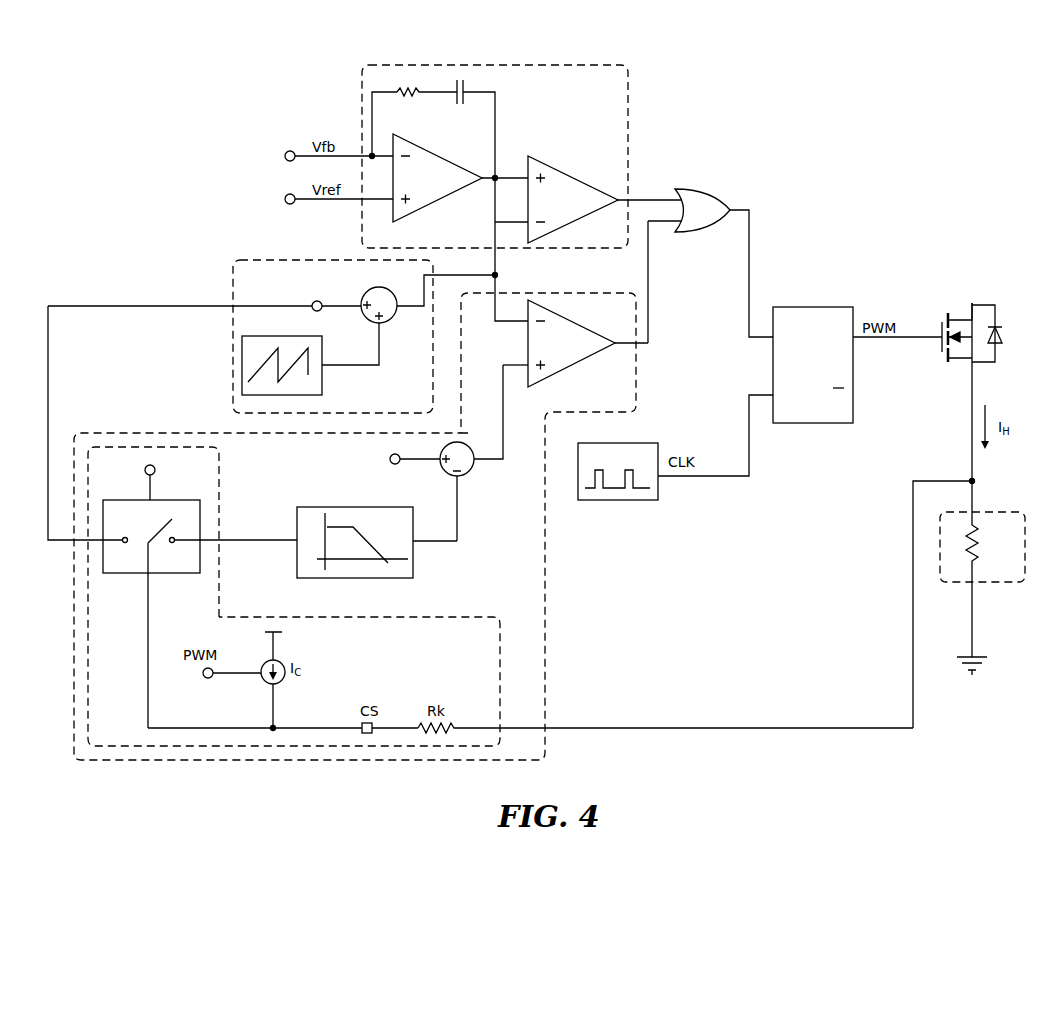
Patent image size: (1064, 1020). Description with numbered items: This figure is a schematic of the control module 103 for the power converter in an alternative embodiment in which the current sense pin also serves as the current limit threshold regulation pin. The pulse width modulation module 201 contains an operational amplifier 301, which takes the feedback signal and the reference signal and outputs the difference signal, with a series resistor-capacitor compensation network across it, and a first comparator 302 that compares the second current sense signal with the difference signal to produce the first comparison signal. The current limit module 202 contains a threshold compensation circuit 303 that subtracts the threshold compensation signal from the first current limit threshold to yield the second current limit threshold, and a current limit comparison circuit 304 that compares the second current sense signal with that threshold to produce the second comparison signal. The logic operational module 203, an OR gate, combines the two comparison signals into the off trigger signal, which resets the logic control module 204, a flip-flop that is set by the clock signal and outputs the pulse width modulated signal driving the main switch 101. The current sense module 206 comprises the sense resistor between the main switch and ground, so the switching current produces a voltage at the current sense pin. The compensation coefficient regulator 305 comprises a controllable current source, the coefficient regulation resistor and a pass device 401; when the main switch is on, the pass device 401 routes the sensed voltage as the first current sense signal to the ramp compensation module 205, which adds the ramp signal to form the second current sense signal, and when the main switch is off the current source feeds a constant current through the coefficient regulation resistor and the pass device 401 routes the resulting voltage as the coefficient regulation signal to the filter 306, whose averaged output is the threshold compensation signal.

The main switch 101 is at (937, 352).
The control module 103 is at (213, 68).
The pulse width modulation module 201 is at (577, 65).
The current limit module 202 is at (637, 373).
The logic operational module 203 is at (700, 187).
The logic control module 204 is at (812, 307).
The ramp compensation module 205 is at (265, 260).
The current sense module 206 is at (998, 512).
The operational amplifier 301 is at (450, 151).
The first comparator 302 is at (605, 199).
The threshold compensation circuit 303 is at (468, 473).
The current limit comparison circuit 304 is at (578, 343).
The compensation coefficient regulator 305 is at (219, 482).
The filter 306 is at (333, 502).
The pass device 401 is at (163, 573).